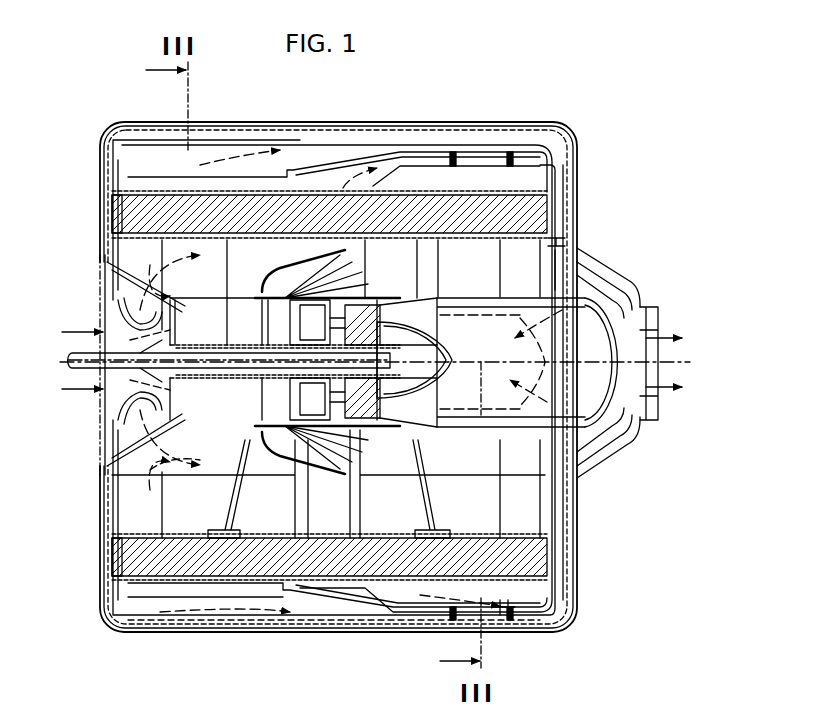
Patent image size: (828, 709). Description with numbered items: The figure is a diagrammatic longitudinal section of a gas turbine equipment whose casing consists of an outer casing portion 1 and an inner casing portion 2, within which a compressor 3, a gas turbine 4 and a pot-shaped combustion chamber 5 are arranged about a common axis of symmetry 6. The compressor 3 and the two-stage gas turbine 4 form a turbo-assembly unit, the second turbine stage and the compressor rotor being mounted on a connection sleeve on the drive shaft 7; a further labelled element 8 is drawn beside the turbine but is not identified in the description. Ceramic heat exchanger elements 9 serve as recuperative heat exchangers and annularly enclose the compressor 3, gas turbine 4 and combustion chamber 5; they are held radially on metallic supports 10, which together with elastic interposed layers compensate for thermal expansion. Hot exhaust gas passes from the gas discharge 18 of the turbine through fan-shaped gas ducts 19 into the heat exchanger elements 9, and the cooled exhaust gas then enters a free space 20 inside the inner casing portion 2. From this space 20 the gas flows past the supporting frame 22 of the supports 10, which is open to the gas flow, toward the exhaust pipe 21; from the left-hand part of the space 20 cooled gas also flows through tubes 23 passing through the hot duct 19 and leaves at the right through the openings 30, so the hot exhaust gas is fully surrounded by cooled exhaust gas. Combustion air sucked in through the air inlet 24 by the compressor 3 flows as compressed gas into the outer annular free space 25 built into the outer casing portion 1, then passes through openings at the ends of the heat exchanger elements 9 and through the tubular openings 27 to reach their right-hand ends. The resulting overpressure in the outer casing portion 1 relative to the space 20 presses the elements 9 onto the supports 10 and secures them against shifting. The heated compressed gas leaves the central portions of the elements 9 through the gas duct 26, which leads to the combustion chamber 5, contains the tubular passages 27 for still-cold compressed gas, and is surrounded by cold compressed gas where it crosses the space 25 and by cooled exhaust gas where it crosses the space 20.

The outer casing portion 1 is at (438, 124).
The inner casing portion 2 is at (112, 528).
The compressor 3 is at (128, 292).
The gas turbine 4 is at (352, 302).
The combustion chamber 5 is at (600, 304).
The axis of symmetry 6 is at (583, 374).
The drive shaft 7 is at (228, 358).
The turbine rotor 8 is at (396, 306).
The ceramic heat exchanger elements 9 is at (548, 198).
The metallic supports 10 is at (228, 245).
The gas discharge 18 is at (264, 325).
The gas ducts 19 is at (296, 520).
The free space 20 is at (125, 468).
The exhaust pipe 21 is at (640, 422).
The supporting frame 22 is at (430, 468).
The tubes 23 is at (270, 290).
The air inlet 24 is at (120, 405).
The outer annular free space 25 is at (262, 124).
The gas duct 26 is at (395, 620).
The tubular openings 27 is at (530, 622).
The openings 30 is at (568, 254).